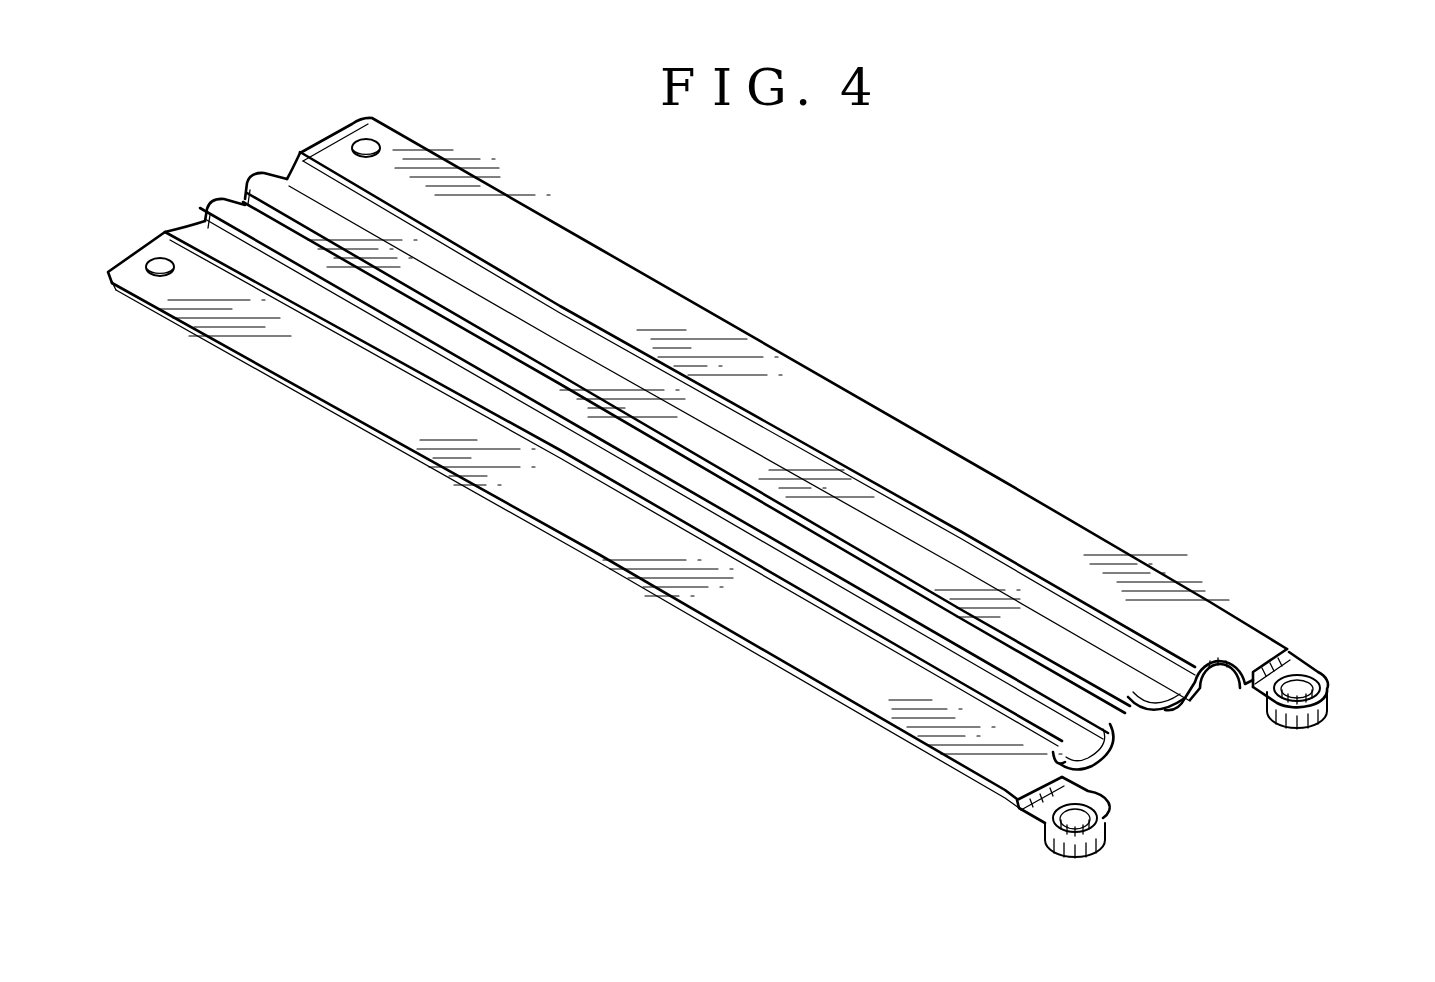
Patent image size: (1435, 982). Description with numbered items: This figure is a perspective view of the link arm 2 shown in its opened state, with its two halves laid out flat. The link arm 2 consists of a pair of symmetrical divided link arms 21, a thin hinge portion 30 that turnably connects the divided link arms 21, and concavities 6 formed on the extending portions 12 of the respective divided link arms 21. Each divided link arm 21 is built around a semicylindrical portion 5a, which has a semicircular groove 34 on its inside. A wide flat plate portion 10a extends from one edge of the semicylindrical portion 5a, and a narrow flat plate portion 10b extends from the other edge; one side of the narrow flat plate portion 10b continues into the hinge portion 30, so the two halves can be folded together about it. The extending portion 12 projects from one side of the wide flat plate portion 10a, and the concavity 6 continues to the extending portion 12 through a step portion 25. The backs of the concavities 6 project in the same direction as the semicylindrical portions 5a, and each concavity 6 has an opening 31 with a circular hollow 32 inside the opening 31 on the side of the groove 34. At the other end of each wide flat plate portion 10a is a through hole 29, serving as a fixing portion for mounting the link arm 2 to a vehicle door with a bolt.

The link arm 2 is at (1000, 428).
The divided link arm 21 is at (800, 363).
The wide flat plate portion 10a is at (1015, 500).
The narrow flat plate portion 10b is at (770, 522).
The semicircular groove 34 is at (1045, 592).
The hinge portion 30 is at (1052, 660).
The semicylindrical portion 5a is at (1180, 706).
The extending portion 12 is at (1256, 645).
The step portion 25 is at (1300, 664).
The opening 31 is at (1322, 680).
The circular hollow 32 is at (1332, 692).
The concavity 6 is at (1305, 722).
The through hole 29 is at (368, 143).